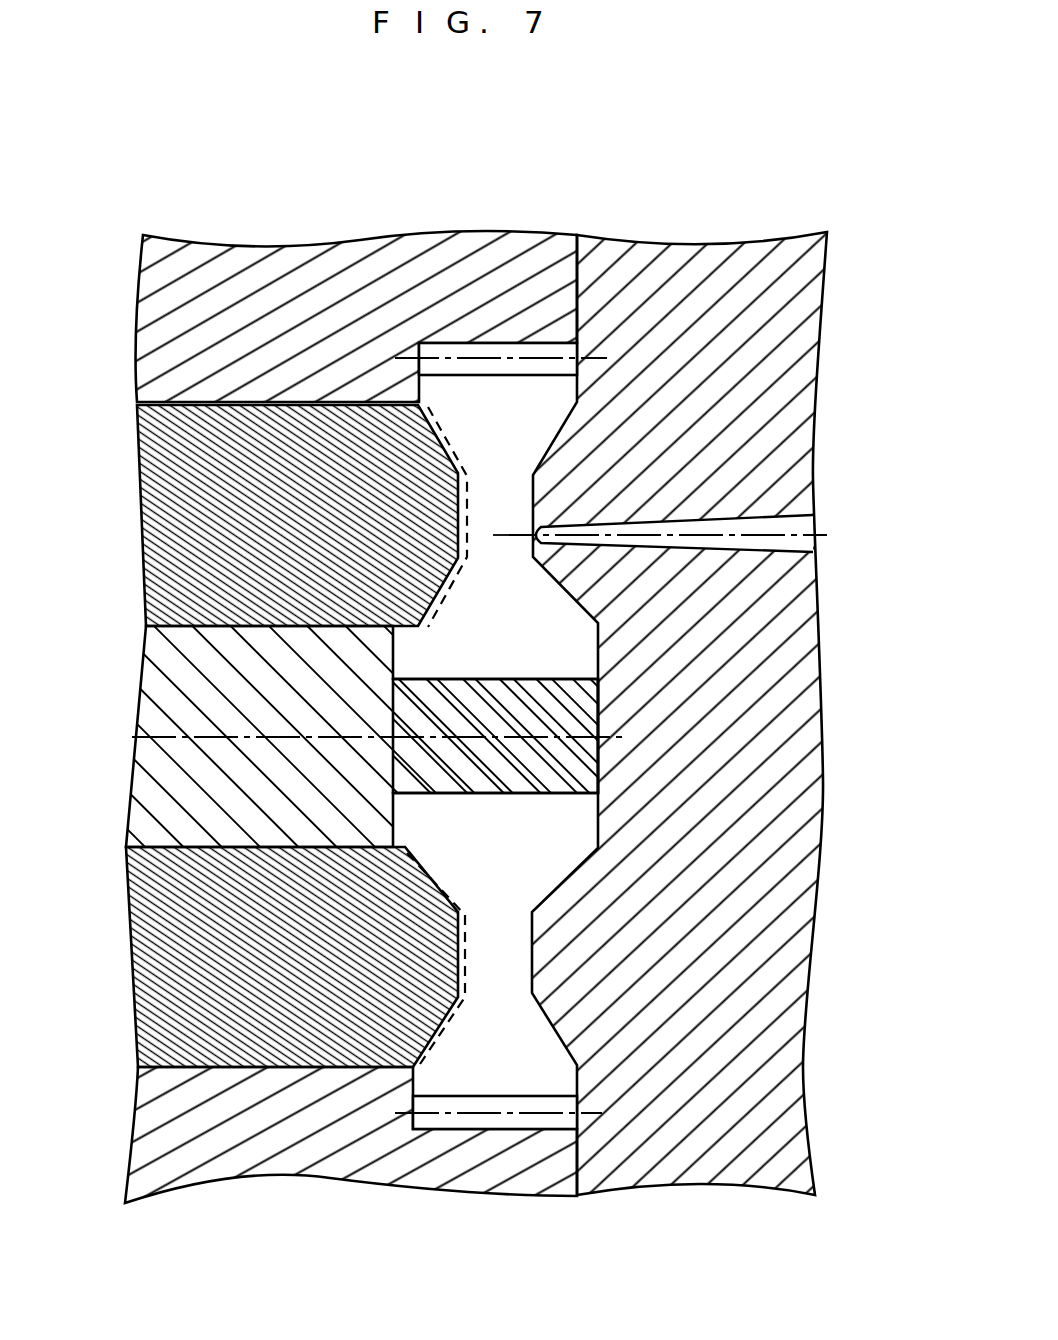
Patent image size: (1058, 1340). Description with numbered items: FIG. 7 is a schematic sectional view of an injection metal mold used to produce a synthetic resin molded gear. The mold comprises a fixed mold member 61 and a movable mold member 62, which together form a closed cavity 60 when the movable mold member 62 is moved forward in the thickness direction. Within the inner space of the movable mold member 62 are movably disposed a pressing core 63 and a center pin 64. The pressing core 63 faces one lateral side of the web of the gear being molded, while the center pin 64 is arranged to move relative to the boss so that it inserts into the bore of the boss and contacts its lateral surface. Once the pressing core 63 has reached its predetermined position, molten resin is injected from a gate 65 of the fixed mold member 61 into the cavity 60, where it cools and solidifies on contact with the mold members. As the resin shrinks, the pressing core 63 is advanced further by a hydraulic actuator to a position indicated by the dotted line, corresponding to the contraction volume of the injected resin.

The cavity 60 is at (452, 337).
The fixed mold member 61 is at (660, 473).
The movable mold member 62 is at (232, 318).
The pressing core 63 is at (234, 549).
The center pin 64 is at (255, 785).
The gate 65 is at (673, 542).